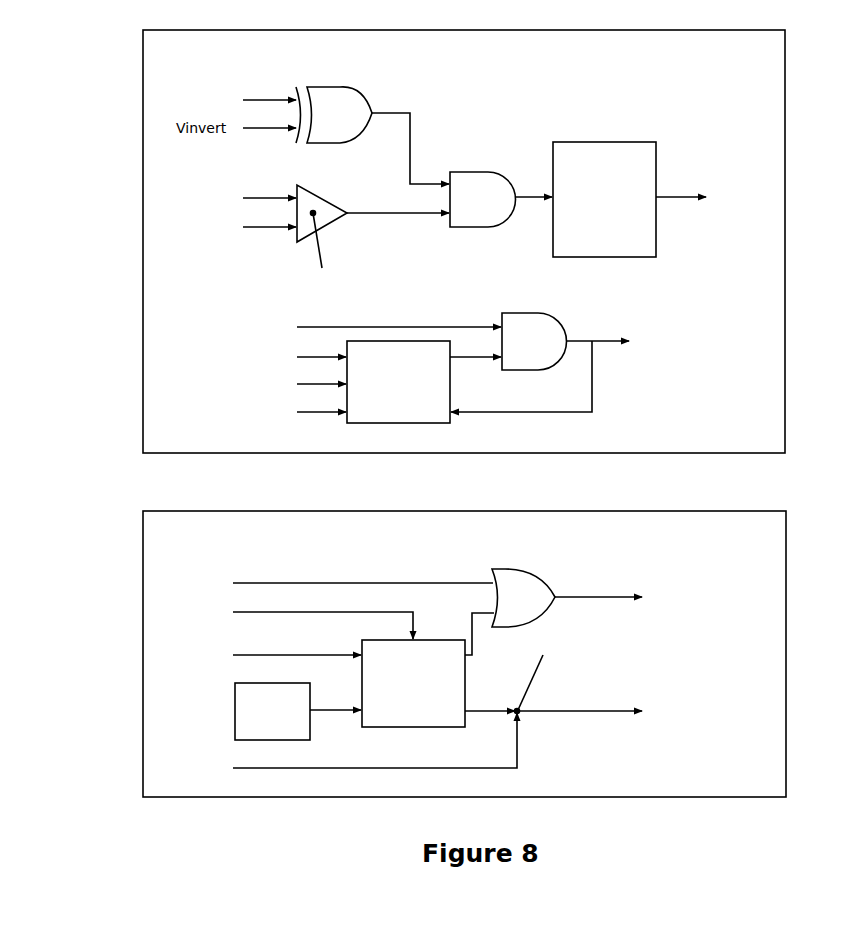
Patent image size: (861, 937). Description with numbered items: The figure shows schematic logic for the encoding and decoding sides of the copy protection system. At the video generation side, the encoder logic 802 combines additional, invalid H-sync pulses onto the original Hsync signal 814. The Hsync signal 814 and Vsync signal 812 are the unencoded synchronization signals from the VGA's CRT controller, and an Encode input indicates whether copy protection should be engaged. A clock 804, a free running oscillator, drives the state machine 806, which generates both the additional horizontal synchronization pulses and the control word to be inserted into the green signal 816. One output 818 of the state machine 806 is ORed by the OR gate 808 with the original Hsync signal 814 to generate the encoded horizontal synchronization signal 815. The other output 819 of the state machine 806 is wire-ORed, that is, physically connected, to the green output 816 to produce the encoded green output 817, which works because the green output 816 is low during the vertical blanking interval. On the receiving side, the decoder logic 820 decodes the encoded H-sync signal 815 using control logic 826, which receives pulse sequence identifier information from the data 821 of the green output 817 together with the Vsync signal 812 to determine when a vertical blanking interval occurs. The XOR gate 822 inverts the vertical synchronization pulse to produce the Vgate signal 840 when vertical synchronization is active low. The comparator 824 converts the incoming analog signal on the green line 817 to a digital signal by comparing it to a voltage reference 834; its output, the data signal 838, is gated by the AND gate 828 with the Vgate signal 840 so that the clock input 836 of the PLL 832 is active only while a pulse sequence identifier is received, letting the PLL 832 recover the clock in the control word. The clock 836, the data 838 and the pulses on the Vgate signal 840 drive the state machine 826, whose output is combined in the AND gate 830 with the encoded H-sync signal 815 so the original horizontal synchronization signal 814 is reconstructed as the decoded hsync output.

The encoder logic 802 is at (788, 600).
The clock 804 is at (232, 690).
The state machine 806 is at (470, 688).
The OR gate 808 is at (532, 568).
The Vsync signal 812 is at (270, 97).
The Hsync signal 814 is at (315, 580).
The encoded horizontal synchronization signal 815 is at (465, 323).
The green signal 816 is at (360, 766).
The encoded green output 817 is at (270, 195).
The state machine output 818 is at (471, 629).
The state machine output 819 is at (500, 713).
The decoder logic 820 is at (788, 150).
The data 821 is at (320, 381).
The XOR gate 822 is at (318, 84).
The comparator 824 is at (320, 189).
The control logic 826 is at (404, 425).
The AND gate 828 is at (465, 170).
The AND gate 830 is at (512, 310).
The PLL 832 is at (590, 140).
The voltage reference 834 is at (257, 229).
The clock 836 is at (540, 199).
The data signal 838 is at (404, 215).
The Vgate signal 840 is at (413, 140).